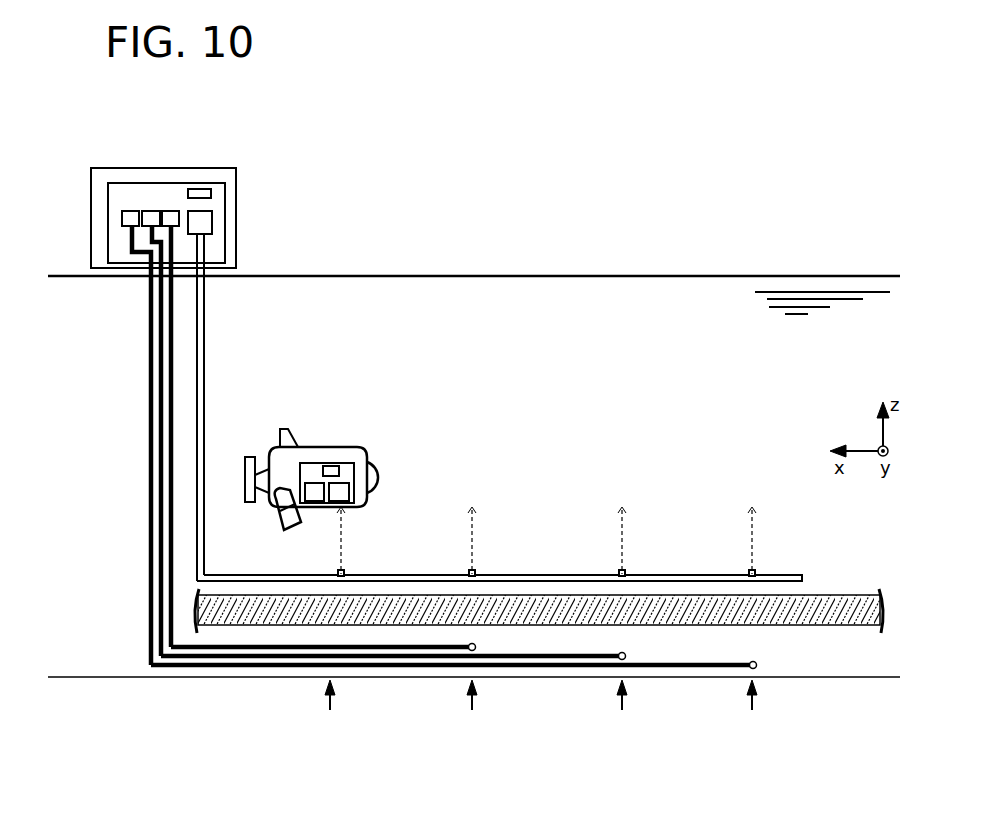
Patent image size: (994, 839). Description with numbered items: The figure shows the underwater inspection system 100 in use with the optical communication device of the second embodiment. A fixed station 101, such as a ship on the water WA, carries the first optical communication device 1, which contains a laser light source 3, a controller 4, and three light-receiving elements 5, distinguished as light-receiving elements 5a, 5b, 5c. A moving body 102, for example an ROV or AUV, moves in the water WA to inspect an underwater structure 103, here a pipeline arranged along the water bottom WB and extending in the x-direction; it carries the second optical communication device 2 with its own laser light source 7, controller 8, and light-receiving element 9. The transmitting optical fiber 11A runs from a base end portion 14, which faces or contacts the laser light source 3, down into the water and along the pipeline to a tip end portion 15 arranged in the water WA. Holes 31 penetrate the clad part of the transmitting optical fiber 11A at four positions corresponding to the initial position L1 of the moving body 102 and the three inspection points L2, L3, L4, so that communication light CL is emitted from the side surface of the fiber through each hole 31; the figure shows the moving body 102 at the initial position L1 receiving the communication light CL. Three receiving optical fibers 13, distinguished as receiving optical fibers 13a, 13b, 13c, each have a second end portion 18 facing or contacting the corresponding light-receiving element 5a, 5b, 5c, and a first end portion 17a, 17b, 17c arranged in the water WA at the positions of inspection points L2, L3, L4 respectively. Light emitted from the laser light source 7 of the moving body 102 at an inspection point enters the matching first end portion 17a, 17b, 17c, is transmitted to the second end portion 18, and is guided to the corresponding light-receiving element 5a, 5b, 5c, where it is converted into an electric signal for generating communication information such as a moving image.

The fixed station 101 is at (233, 152).
The first optical communication device 1 is at (225, 215).
The controller 4 is at (211, 193).
The laser light source 3 is at (205, 223).
The base end portion 14 is at (201, 240).
The light-receiving elements 5 is at (180, 127).
The light-receiving element 5a is at (172, 211).
The light-receiving element 5b is at (149, 211).
The light-receiving element 5c is at (128, 211).
The second end portion 18 is at (131, 230).
The receiving optical fibers 13 is at (75, 412).
The receiving optical fiber 13a is at (171, 487).
The receiving optical fiber 13b is at (161, 457).
The receiving optical fiber 13c is at (151, 433).
The first end portion 17a is at (478, 647).
The first end portion 17b is at (628, 656).
The first end portion 17c is at (759, 665).
The transmitting optical fiber 11A is at (204, 373).
The tip end portion 15 is at (797, 572).
The holes 31 is at (337, 572).
The communication light CL is at (343, 530).
The underwater structure 103 is at (866, 603).
The moving body 102 is at (392, 458).
The second optical communication device 2 is at (307, 463).
The laser light source 7 is at (315, 483).
The controller 8 is at (332, 466).
The light-receiving element 9 is at (340, 483).
The underwater inspection system 100 is at (665, 384).
The water WA is at (722, 296).
The water bottom WB is at (72, 668).
The initial position L1 is at (330, 707).
The inspection point L2 is at (472, 707).
The inspection point L3 is at (622, 707).
The inspection point L4 is at (752, 707).